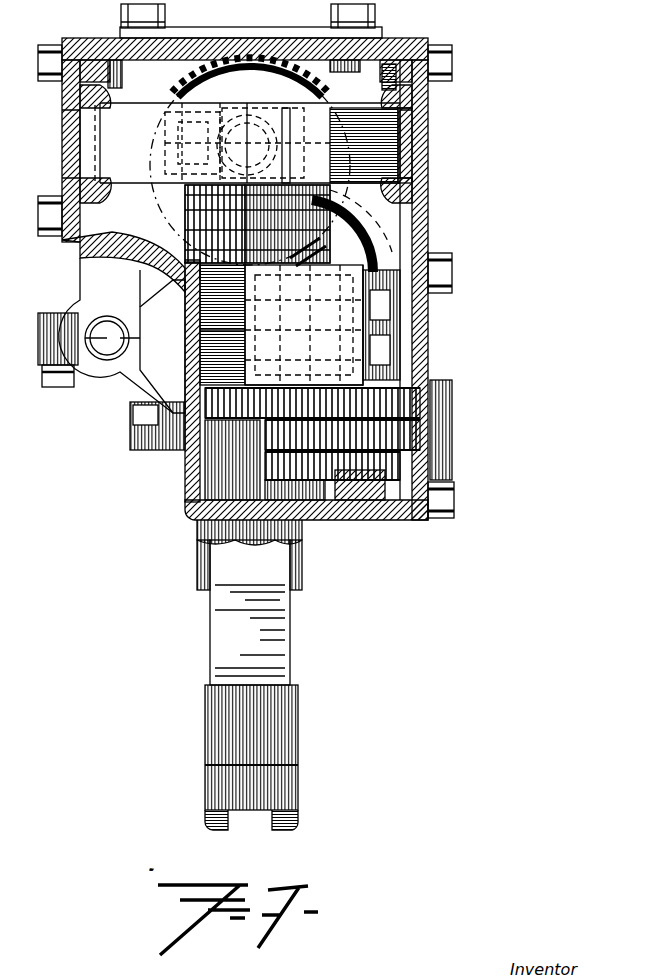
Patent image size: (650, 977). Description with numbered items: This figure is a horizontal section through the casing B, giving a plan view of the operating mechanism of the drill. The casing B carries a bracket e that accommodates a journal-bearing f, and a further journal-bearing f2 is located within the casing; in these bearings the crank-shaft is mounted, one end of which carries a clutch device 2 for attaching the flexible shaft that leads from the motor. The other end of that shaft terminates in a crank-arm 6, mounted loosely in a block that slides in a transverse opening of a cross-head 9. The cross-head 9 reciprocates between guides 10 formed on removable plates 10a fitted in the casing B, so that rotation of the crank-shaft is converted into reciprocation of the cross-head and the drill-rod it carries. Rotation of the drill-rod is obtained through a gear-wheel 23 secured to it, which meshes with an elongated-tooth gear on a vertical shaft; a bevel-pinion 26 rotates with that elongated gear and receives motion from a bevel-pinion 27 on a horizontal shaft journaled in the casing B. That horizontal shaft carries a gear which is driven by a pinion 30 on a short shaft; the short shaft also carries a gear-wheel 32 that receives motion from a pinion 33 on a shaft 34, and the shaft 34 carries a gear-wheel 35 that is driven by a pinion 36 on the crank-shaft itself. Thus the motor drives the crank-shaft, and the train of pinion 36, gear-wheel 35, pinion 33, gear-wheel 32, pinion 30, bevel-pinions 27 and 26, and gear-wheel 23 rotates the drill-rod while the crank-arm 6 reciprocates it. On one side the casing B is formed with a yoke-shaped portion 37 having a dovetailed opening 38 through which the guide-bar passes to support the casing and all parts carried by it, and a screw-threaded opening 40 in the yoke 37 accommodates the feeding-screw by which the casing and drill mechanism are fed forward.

The casing B is at (382, 30).
The clutch device 2 is at (255, 800).
The crank-arm 6 is at (185, 215).
The cross-head 9 is at (440, 128).
The guides 10 is at (78, 103).
The removable plates 10a is at (448, 153).
The gear-wheel 23 is at (250, 161).
The bevel-pinion 26 is at (352, 245).
The bevel-pinion 27 is at (398, 338).
The pinion 30 is at (190, 498).
The gear-wheel 32 is at (430, 432).
The pinion 33 is at (430, 445).
The shaft 34 is at (430, 460).
The gear-wheel 35 is at (430, 412).
The pinion 36 is at (190, 418).
The yoke-shaped portion 37 is at (105, 335).
The dovetailed opening 38 is at (123, 322).
The screw-threaded opening 40 is at (102, 366).
The bracket e is at (249, 602).
The journal-bearing f is at (238, 747).
The journal-bearing f2 is at (188, 240).